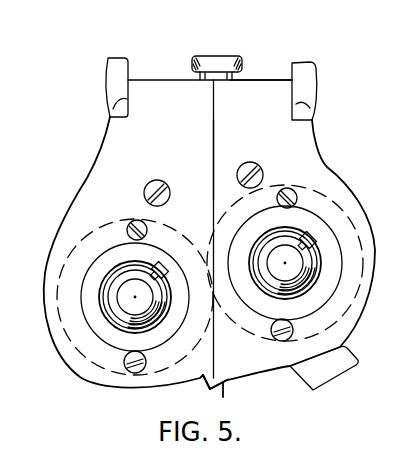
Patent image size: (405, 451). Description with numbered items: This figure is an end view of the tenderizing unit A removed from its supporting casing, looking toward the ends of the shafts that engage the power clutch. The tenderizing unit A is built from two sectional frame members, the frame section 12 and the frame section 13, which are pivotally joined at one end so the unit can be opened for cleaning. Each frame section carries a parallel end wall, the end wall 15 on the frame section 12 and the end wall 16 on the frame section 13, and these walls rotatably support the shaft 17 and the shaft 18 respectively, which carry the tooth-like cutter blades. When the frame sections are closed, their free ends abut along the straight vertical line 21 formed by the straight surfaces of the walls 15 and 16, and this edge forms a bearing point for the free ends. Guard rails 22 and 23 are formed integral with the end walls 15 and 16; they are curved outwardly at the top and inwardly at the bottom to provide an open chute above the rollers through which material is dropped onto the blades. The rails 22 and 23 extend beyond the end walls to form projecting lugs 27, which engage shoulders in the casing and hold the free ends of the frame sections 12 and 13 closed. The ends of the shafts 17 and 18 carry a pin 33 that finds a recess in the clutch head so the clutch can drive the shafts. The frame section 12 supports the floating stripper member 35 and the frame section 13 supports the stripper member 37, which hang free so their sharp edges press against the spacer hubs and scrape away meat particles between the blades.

The frame section 12 is at (347, 185).
The frame section 13 is at (88, 178).
The end wall 15 is at (265, 90).
The end wall 16 is at (153, 88).
The shaft 17 is at (288, 272).
The shaft 18 is at (133, 297).
The straight vertical line 21 is at (212, 160).
The guard rail 22 is at (305, 66).
The guard rail 23 is at (108, 58).
The projecting lug 27 is at (115, 108).
The pin 33 is at (163, 262).
The stripper member 35 is at (327, 370).
The stripper member 37 is at (223, 386).
The tenderizing unit A is at (327, 167).